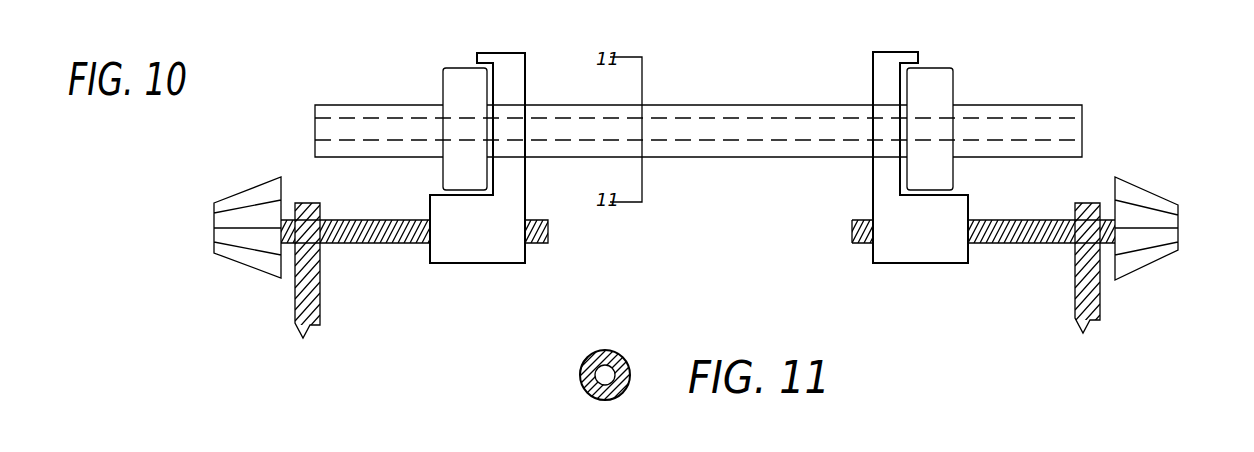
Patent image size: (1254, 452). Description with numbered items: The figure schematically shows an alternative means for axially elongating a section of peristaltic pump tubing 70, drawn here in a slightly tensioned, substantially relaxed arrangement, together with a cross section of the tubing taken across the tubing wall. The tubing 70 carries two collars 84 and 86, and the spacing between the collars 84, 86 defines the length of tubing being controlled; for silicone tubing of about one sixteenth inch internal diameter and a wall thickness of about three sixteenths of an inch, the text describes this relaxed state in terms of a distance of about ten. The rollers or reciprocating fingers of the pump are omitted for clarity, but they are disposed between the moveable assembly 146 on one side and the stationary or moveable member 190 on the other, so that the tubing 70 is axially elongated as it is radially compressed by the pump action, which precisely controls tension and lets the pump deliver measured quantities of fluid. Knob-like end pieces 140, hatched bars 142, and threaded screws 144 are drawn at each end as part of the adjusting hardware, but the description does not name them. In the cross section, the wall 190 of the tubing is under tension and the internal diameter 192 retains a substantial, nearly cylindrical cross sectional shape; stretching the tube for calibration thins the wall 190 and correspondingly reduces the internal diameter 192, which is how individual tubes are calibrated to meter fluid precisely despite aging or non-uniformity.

In FIG. 10, the peristaltic pump tubing 70 is at (786, 105).
In FIG. 10, the collar 84 is at (453, 68).
In FIG. 10, the collar 86 is at (945, 85).
In FIG. 10, the knob 140 is at (255, 185).
In FIG. 10, the stop bar 142 is at (322, 283).
In FIG. 10, the threaded screw 144 is at (381, 220).
In FIG. 10, the moveable assembly 146 is at (918, 52).
In FIG. 10, the stationary or moveable member 190 is at (526, 53).
In FIG. 11, the stationary or moveable member 190 is at (625, 355).
In FIG. 11, the internal diameter 192 is at (582, 380).